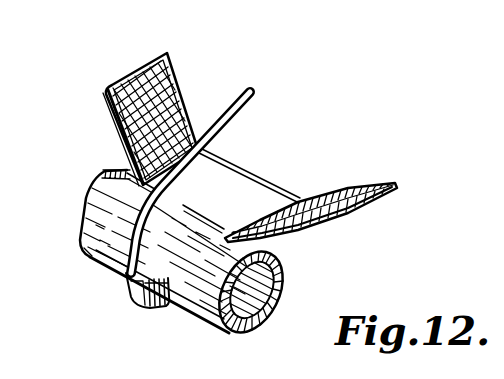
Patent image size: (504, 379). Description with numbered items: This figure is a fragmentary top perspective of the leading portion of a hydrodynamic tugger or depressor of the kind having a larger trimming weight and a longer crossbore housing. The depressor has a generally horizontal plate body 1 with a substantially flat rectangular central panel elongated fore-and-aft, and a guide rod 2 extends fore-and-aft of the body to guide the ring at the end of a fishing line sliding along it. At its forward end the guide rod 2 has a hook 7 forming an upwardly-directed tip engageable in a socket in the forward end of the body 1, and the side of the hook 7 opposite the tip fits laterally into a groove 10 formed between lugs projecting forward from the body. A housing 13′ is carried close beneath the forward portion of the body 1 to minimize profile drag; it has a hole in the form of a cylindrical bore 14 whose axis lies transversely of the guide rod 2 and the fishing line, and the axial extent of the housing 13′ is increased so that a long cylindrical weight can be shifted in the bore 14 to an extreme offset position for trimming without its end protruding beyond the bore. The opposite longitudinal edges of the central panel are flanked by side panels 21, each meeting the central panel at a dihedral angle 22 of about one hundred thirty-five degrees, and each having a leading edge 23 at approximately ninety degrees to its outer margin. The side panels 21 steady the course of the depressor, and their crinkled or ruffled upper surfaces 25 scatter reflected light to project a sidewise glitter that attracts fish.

The plate body 1 is at (244, 176).
The guide rod 2 is at (258, 97).
The hook 7 is at (150, 307).
The groove 10 is at (158, 308).
The housing 13′ is at (284, 266).
The bore 14 is at (258, 322).
The side panels 21 is at (158, 57).
The dihedral angle 22 is at (116, 174).
The leading edge 23 is at (115, 108).
The upper surfaces 25 is at (172, 84).